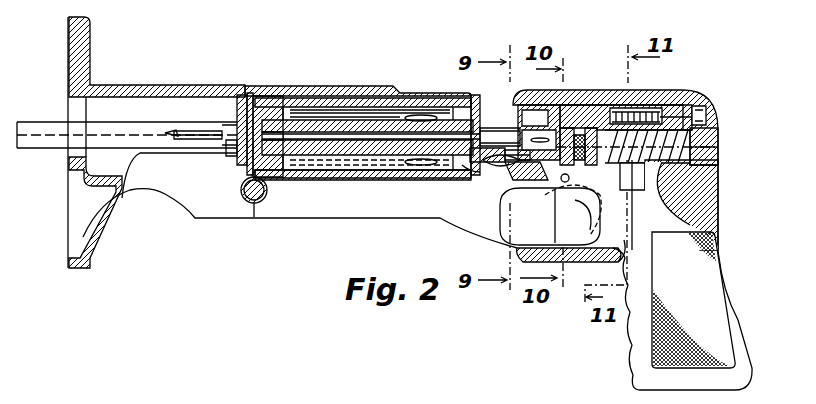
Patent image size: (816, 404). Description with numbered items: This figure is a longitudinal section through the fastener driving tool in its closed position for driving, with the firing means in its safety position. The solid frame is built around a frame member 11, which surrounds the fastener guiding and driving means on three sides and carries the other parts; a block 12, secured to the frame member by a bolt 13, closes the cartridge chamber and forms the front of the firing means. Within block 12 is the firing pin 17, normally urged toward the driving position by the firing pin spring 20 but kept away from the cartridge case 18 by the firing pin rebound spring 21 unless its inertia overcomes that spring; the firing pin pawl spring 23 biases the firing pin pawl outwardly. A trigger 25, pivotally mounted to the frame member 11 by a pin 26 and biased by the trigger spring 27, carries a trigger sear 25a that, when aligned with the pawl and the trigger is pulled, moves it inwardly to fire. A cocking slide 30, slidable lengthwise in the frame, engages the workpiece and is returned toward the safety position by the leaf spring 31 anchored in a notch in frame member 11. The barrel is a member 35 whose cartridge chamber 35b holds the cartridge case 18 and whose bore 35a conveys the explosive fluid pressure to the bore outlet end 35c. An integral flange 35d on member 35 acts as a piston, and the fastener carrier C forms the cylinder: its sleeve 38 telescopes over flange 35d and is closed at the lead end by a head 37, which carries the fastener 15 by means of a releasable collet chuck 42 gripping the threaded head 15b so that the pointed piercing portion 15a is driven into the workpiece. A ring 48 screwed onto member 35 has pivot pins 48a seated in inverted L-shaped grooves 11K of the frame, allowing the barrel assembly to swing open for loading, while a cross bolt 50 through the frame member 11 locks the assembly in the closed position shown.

The frame member 11 is at (326, 88).
The inverted L-shaped grooves 11K is at (468, 172).
The block 12 is at (590, 105).
The bolt 13 is at (706, 115).
The fastener 15 is at (197, 139).
The workpiece piercing portion 15a is at (172, 132).
The threaded head 15b is at (237, 158).
The firing pin 17 is at (533, 117).
The cartridge case 18 is at (497, 128).
The firing pin spring 20 is at (668, 192).
The firing pin rebound spring 21 is at (566, 128).
The firing pin pawl spring 23 is at (637, 127).
The trigger 25 is at (565, 233).
The trigger sear 25a is at (572, 214).
The pin 26 is at (565, 183).
The trigger spring 27 is at (633, 192).
The cocking slide 30 is at (40, 124).
The leaf spring 31 is at (576, 262).
The member 35 is at (362, 122).
The bore 35a is at (305, 136).
The cartridge chamber 35b is at (478, 98).
The bore outlet end 35c is at (242, 186).
The flange 35d is at (270, 100).
The head 37 is at (250, 93).
The sleeve 38 is at (338, 168).
The releasable chuck 42 is at (226, 125).
The ring 48 is at (540, 108).
The pins 48a is at (512, 178).
The cross bolt 50 is at (255, 203).
The fastener carrier C is at (262, 128).